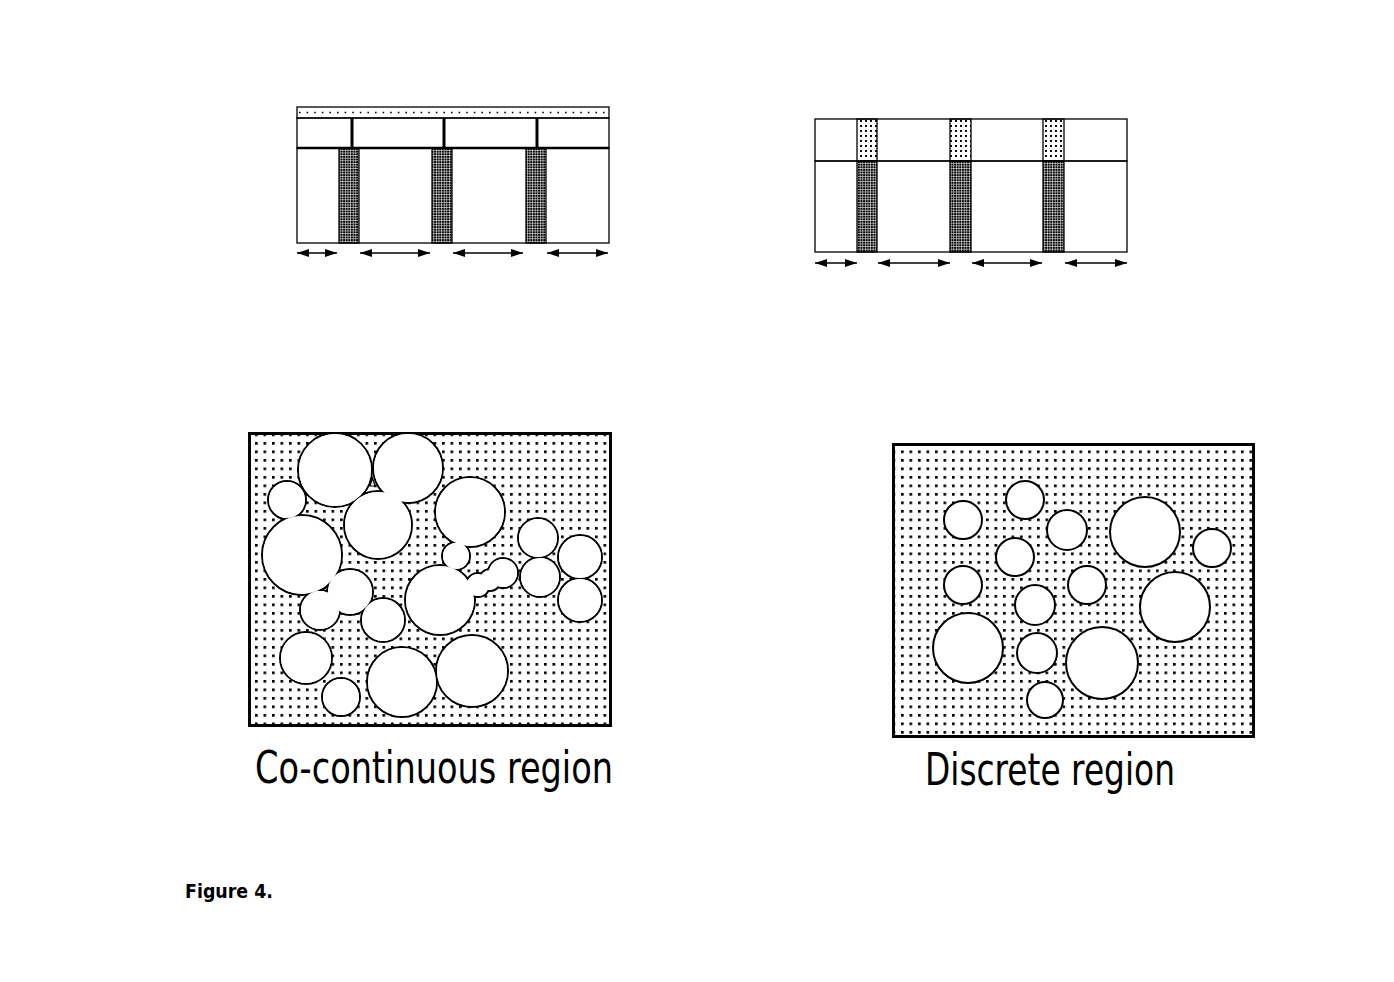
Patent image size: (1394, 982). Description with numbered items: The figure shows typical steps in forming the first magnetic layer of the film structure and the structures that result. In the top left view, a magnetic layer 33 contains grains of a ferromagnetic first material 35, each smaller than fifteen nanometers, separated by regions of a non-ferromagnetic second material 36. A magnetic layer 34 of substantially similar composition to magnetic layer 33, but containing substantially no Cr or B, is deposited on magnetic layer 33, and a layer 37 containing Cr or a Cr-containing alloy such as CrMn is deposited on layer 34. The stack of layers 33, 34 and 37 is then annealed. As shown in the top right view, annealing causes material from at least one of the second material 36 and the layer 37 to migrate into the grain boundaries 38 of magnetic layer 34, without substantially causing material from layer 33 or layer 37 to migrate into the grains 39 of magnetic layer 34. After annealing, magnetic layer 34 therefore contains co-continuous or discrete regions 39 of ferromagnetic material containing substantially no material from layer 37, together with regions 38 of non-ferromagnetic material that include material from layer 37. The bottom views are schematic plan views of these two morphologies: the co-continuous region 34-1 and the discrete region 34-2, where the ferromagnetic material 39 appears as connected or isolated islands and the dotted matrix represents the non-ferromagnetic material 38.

The magnetic layer 33 is at (630, 201).
The magnetic layer 34 is at (622, 138).
The first material 35 is at (330, 265).
The second material 36 is at (531, 173).
The layer containing Cr or a Cr-containing alloy 37 is at (620, 116).
The grain boundaries 38 is at (530, 130).
The grains 39 is at (325, 132).
The co-continuous region 34-1 is at (506, 578).
The discrete region 34-2 is at (1135, 589).